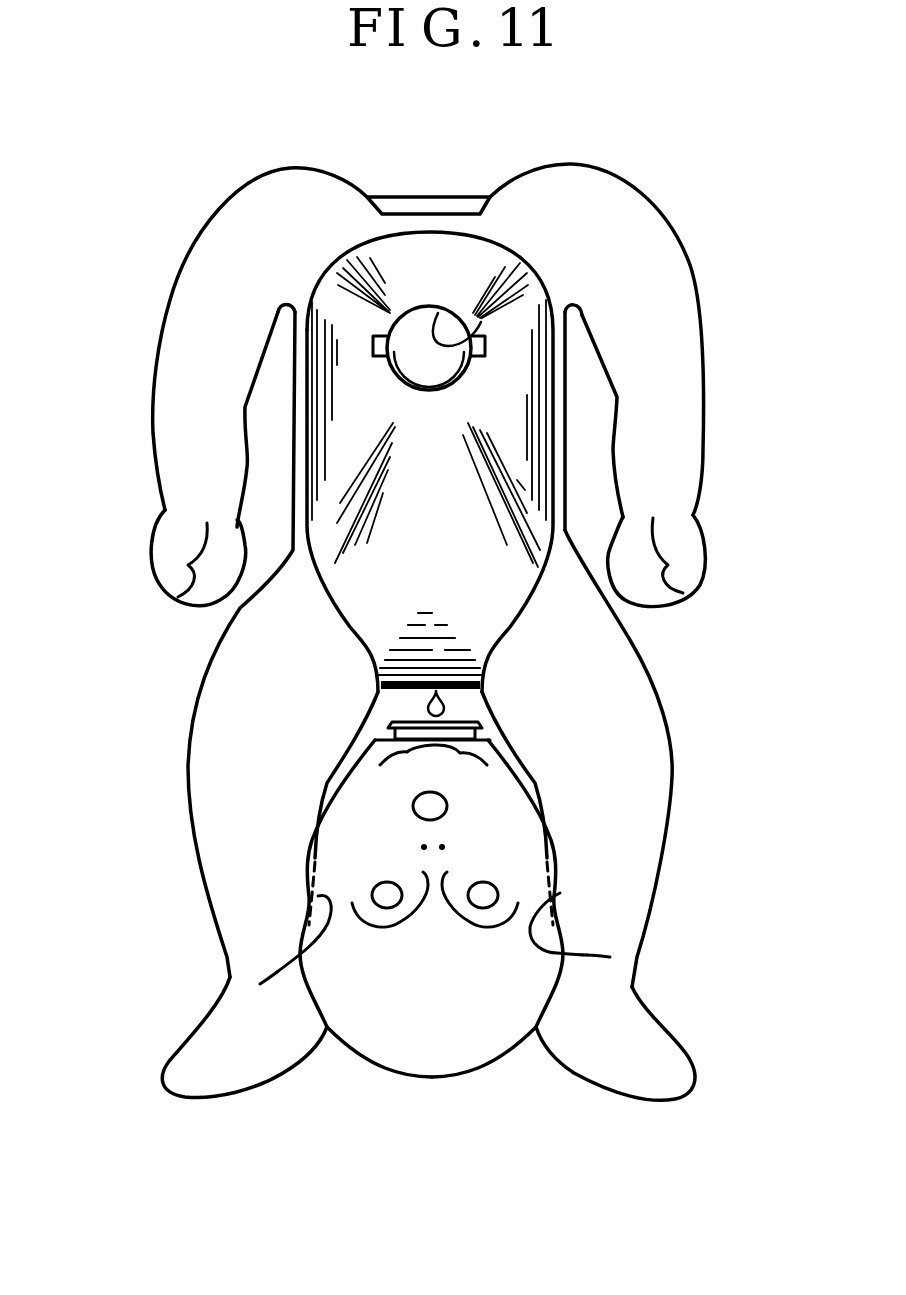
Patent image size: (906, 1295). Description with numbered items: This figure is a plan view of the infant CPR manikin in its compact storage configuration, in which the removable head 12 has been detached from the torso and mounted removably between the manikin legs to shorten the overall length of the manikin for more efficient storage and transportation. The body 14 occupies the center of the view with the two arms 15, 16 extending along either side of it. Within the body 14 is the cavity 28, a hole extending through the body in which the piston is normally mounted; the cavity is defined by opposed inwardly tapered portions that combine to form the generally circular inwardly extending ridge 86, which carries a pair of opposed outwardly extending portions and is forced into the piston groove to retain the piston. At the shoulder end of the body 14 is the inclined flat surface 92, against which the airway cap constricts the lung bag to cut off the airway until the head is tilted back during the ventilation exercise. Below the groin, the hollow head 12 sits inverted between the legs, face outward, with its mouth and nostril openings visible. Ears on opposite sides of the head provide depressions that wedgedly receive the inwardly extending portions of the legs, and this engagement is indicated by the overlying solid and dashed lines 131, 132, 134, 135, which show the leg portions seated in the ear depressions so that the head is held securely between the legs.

The head 12 is at (435, 1077).
The body 14 is at (568, 497).
The arm 15 is at (702, 360).
The arm 16 is at (153, 433).
The cavity 28 is at (433, 435).
The inwardly extending ridge 86 is at (477, 335).
The inclined flat surface 92 is at (438, 202).
The overlying solid and dashed line 131 is at (560, 893).
The overlying solid and dashed line 132 is at (318, 896).
The overlying solid and dashed line 134 is at (277, 972).
The overlying solid and dashed line 135 is at (587, 955).